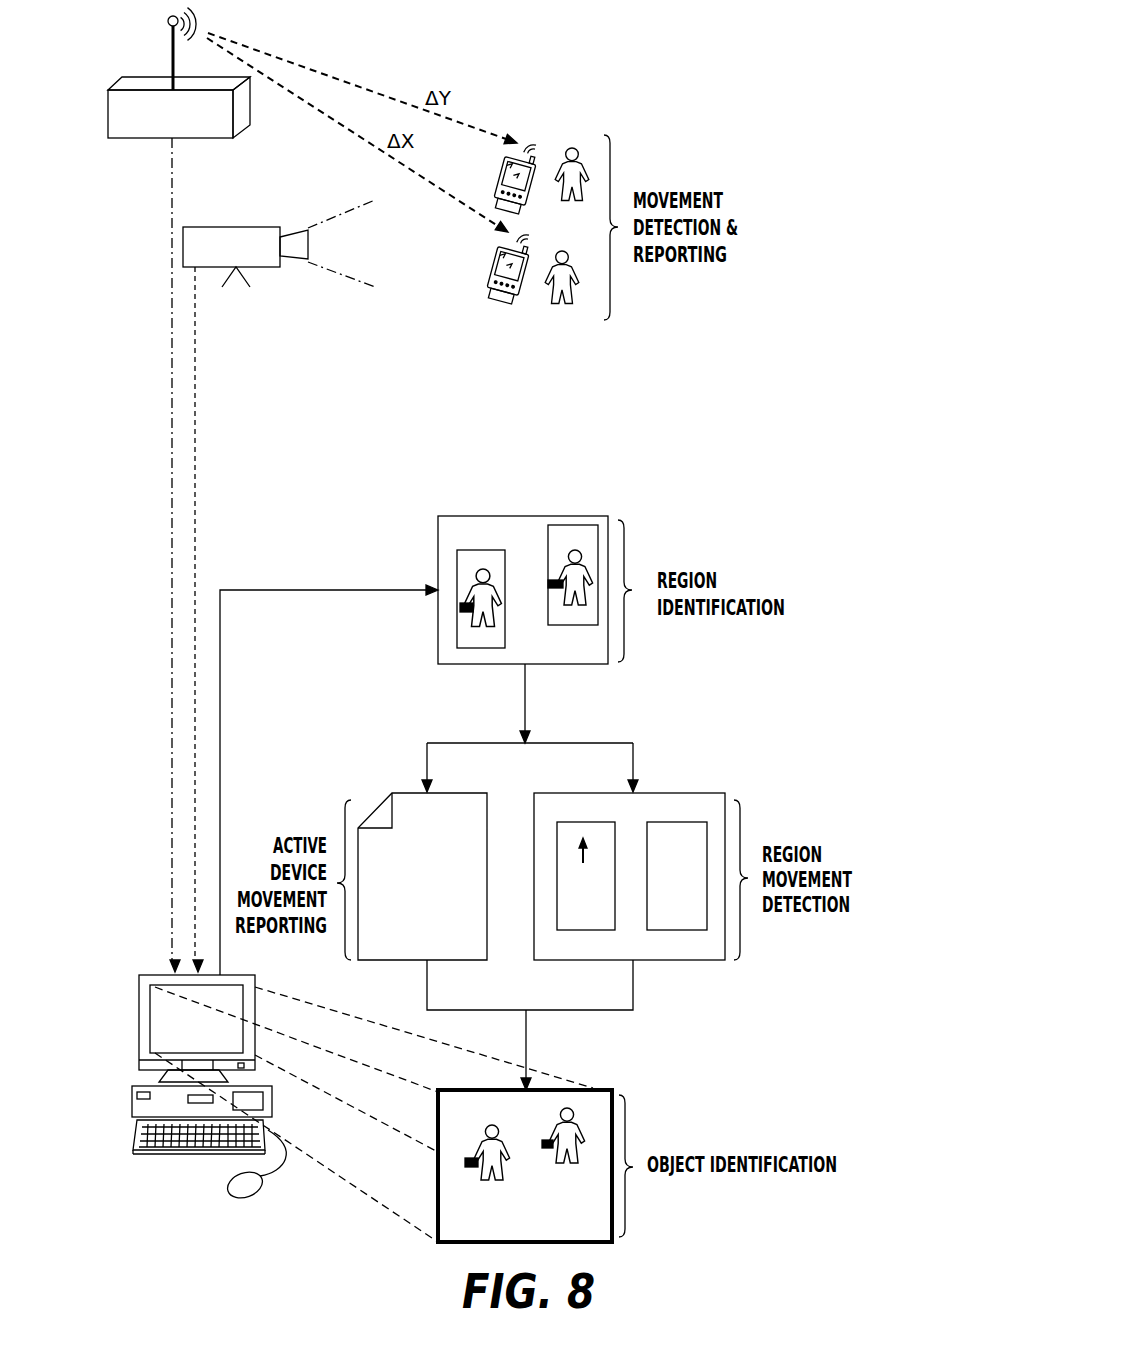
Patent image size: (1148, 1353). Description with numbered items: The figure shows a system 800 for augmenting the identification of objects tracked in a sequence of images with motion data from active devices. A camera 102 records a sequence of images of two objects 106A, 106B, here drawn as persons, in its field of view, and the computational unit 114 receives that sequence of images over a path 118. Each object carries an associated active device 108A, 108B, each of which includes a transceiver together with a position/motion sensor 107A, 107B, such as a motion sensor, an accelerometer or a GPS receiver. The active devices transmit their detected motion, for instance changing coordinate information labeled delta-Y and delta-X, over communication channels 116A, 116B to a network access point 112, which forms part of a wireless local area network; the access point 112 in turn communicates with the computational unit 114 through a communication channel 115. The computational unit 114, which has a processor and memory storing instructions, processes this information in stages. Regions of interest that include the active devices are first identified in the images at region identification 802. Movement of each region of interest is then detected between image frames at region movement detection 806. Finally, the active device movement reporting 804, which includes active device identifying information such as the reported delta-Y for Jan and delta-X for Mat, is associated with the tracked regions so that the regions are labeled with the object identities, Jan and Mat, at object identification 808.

The system 800 is at (748, 53).
The camera 102 is at (232, 227).
The object 106A is at (565, 155).
The object 106B is at (562, 305).
The position/motion sensor 107A is at (497, 212).
The position/motion sensor 107B is at (503, 303).
The active device 108A is at (503, 167).
The active device 108B is at (495, 267).
The network access point 112 is at (137, 140).
The computational unit 114 is at (148, 968).
The communication channel 115 is at (172, 457).
The communication channel 116A is at (381, 94).
The communication channel 116B is at (357, 135).
The path 118 is at (195, 508).
The region identification 802 is at (525, 516).
The active device movement reporting 804 is at (393, 792).
The region movement detection 806 is at (682, 792).
The object identification 808 is at (592, 1088).